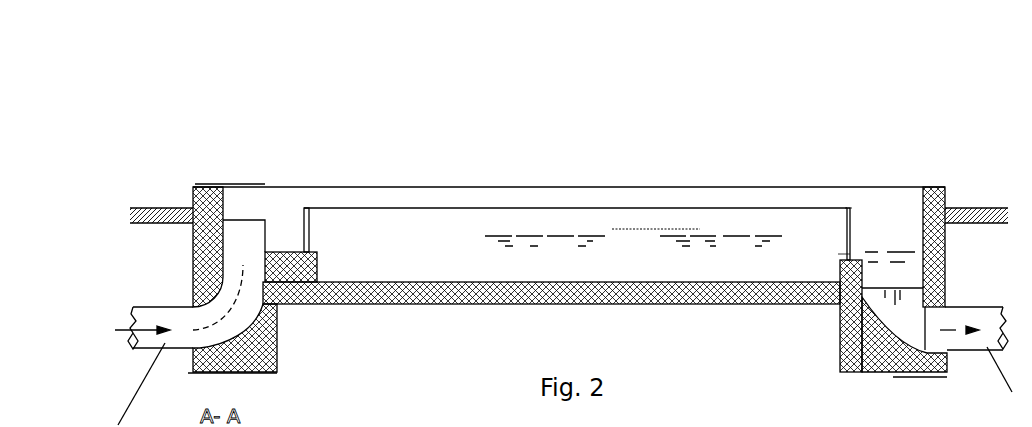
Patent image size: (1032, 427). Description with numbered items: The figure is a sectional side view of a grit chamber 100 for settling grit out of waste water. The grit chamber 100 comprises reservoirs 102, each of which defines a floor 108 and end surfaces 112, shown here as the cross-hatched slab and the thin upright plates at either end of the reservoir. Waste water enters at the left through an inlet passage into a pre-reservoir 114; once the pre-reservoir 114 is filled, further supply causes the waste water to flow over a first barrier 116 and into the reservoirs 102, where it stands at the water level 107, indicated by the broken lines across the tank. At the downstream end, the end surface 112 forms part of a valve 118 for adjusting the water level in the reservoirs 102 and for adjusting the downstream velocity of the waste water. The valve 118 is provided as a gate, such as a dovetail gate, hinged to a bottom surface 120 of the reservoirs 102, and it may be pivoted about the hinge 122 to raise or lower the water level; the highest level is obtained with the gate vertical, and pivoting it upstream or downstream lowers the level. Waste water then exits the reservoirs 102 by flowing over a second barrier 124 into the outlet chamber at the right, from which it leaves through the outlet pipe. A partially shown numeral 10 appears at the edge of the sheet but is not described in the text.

The grit chamber 100 is at (642, 155).
The reservoir 102 is at (413, 252).
The water level 107 is at (571, 229).
The floor 108 is at (441, 273).
The end surface 112 is at (309, 240).
The pre-reservoir 114 is at (282, 220).
The first barrier 116 is at (310, 215).
The valve 118 is at (856, 258).
The bottom surface 120 is at (864, 222).
The hinge 122 is at (835, 255).
The second barrier 124 is at (848, 208).
The system (partially shown) 10 is at (1023, 65).